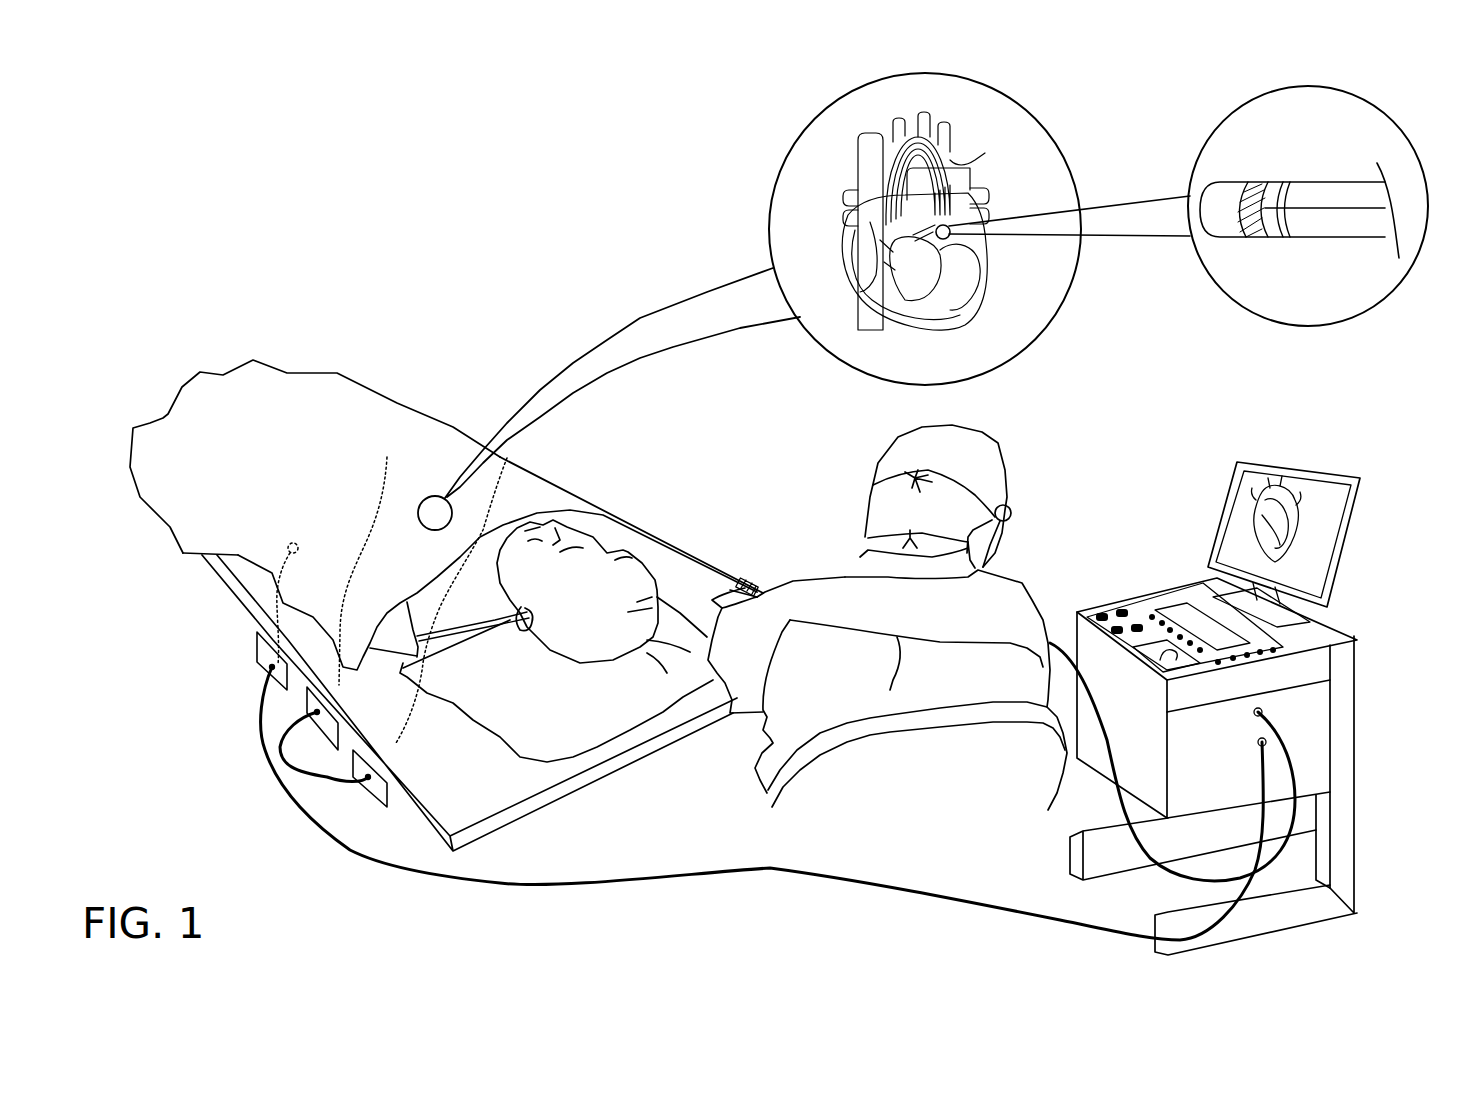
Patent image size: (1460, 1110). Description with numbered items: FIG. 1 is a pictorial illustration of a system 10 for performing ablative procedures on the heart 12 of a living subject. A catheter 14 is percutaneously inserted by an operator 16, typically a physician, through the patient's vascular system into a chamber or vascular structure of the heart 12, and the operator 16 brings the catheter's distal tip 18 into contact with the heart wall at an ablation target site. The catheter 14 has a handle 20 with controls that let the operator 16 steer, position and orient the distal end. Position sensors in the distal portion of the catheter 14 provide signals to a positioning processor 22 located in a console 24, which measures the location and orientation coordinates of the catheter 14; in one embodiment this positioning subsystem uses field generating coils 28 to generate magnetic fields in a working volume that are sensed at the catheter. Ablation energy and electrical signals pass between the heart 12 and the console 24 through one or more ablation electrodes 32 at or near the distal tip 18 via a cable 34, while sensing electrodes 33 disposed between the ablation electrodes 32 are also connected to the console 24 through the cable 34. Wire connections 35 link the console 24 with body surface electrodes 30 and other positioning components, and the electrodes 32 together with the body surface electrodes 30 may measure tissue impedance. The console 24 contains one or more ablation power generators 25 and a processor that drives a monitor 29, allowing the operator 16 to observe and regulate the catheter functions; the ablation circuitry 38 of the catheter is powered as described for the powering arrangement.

The system 10 is at (1398, 96).
The heart 12 is at (975, 330).
The catheter 14 is at (973, 153).
The operator 16 is at (795, 570).
The distal tip 18 is at (1228, 240).
The handle 20 is at (727, 567).
The positioning processor 22 is at (1318, 775).
The console 24 is at (1253, 708).
The ablation power generators 25 is at (1318, 667).
The field generating coils 28 is at (390, 792).
The monitor 29 is at (1354, 500).
The body surface electrodes 30 is at (385, 458).
The ablation electrodes 32 is at (1253, 182).
The sensing electrodes 33 is at (1283, 237).
The cable 34 is at (1373, 215).
The wire connections 35 is at (273, 578).
The ablation circuitry 38 is at (1117, 817).